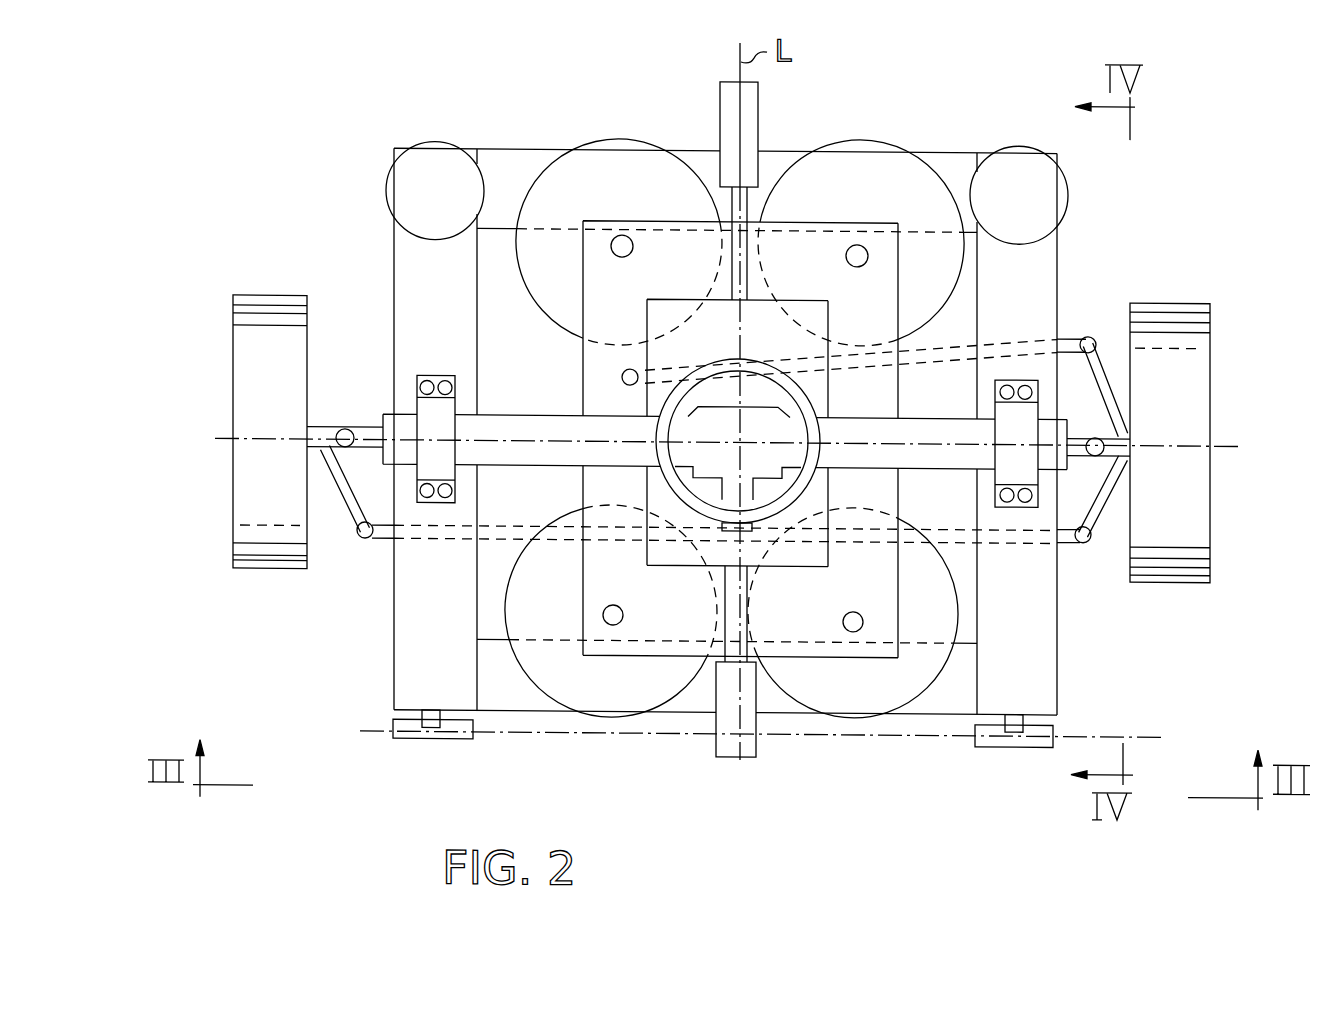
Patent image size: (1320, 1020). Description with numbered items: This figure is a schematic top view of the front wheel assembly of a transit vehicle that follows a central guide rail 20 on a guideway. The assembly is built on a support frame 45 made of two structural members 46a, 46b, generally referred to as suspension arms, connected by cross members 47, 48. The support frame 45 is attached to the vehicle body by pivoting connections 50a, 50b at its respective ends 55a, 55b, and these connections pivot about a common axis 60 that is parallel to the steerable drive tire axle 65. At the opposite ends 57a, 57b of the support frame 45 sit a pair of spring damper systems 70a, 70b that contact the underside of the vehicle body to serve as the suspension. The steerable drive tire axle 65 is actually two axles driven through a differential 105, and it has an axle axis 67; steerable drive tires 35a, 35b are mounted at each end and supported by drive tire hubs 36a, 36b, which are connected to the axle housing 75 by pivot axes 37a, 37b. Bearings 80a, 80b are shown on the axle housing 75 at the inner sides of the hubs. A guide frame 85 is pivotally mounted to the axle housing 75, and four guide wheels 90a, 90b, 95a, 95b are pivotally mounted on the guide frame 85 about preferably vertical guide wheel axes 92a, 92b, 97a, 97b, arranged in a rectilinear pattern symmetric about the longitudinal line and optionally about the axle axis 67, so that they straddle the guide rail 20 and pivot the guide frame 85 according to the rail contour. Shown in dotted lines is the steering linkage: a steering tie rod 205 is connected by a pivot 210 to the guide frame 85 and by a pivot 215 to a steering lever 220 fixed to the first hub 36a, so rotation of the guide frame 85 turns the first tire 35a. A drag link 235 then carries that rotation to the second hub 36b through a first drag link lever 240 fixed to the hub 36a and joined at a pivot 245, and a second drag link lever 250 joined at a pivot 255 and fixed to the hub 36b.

The guide rail 20 is at (712, 750).
The first steerable drive tire 35a is at (1192, 537).
The second steerable drive tire 35b is at (248, 519).
The first steerable drive tire hub 36a is at (1120, 432).
The second steerable drive tire hub 36b is at (336, 434).
The pivot axis 37a is at (1098, 415).
The pivot axis 37b is at (332, 451).
The support frame 45 is at (1045, 676).
The structural member 46a is at (1042, 645).
The structural member 46b is at (415, 643).
The cross member 47 is at (945, 714).
The cross member 48 is at (942, 150).
The pivoting connection 50a is at (1003, 746).
The pivoting connection 50b is at (420, 744).
The end of support frame 55a is at (1047, 699).
The end of support frame 55b is at (428, 712).
The end of support frame 57a is at (1065, 232).
The end of support frame 57b is at (405, 243).
The common axis 60 is at (1143, 734).
The steerable drive tire axle 65 is at (383, 417).
The axle axis 67 is at (1240, 443).
The spring damper system 70a is at (1022, 168).
The spring damper system 70b is at (445, 168).
The axle housing 75 is at (920, 432).
The right bearing 80a is at (1010, 378).
The left bearing 80b is at (433, 378).
The guide frame 85 is at (795, 252).
The guide wheel 90a is at (852, 706).
The guide wheel 90b is at (600, 704).
The guide wheel axis 92a is at (850, 611).
The guide wheel axis 92b is at (612, 606).
The guide wheel 95a is at (852, 168).
The guide wheel 95b is at (603, 168).
The guide wheel axis 97a is at (857, 266).
The guide wheel axis 97b is at (630, 255).
The differential 105 is at (708, 428).
The steering tie rod 205 is at (1030, 338).
The pivot 210 is at (622, 377).
The pivot 215 is at (1086, 334).
The steering lever 220 is at (1103, 363).
The drag link 235 is at (1000, 543).
The first drag link lever 240 is at (1105, 498).
The pivot 245 is at (1088, 542).
The second drag link lever 250 is at (337, 510).
The pivot 255 is at (369, 541).